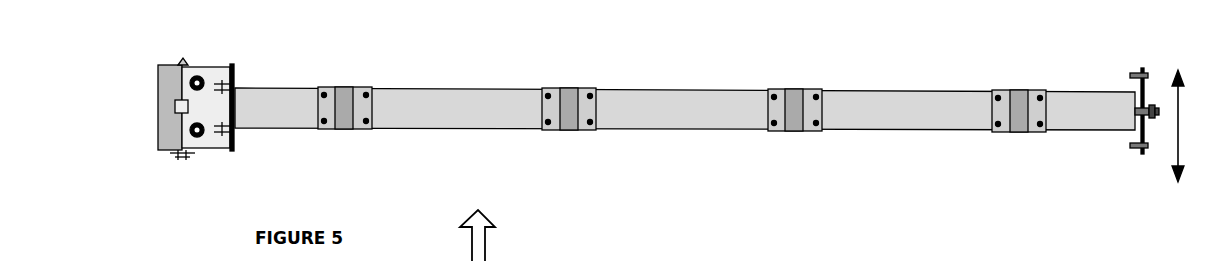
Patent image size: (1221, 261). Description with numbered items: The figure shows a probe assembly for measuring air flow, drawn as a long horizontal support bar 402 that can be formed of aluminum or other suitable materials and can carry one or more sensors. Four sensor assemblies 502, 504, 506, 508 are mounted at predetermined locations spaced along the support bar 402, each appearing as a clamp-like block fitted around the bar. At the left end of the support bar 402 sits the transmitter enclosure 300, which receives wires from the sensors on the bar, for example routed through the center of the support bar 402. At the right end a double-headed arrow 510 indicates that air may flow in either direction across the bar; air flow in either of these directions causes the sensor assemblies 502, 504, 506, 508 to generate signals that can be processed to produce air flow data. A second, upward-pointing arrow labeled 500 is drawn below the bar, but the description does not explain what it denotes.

The transmitter enclosure 300 is at (192, 93).
The support bar 402 is at (685, 122).
The direction arrow 500 is at (457, 235).
The sensor assembly 502 is at (346, 95).
The sensor assembly 504 is at (569, 96).
The sensor assembly 506 is at (795, 97).
The sensor assembly 508 is at (1019, 99).
The arrow 510 is at (1163, 108).